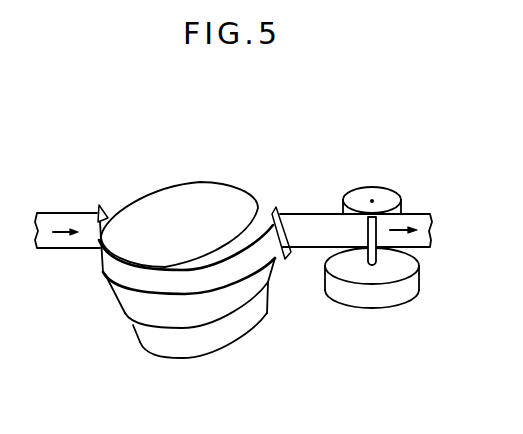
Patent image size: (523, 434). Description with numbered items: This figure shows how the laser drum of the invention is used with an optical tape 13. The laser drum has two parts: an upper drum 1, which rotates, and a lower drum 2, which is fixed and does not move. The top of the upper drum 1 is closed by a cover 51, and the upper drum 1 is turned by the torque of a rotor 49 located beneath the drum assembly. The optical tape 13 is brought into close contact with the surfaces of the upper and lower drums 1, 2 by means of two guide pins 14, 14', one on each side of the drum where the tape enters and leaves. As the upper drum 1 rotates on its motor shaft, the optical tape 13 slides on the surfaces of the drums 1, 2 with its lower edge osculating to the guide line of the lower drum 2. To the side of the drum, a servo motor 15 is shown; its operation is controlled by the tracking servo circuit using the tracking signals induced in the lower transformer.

The upper drum 1 is at (258, 232).
The lower drum 2 is at (127, 312).
The optical tape 13 is at (312, 213).
The guide pin 14 is at (292, 287).
The guide pin 14' is at (119, 173).
The servo motor 15 is at (408, 288).
The rotor 49 is at (225, 344).
The cover 51 is at (185, 188).